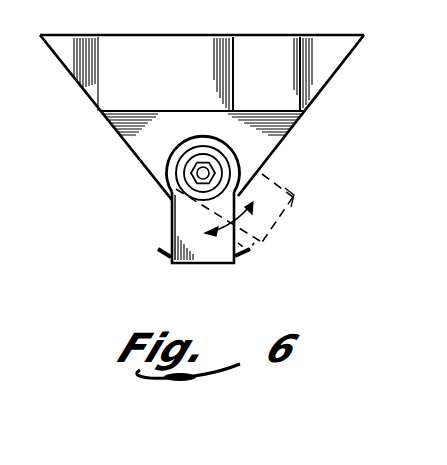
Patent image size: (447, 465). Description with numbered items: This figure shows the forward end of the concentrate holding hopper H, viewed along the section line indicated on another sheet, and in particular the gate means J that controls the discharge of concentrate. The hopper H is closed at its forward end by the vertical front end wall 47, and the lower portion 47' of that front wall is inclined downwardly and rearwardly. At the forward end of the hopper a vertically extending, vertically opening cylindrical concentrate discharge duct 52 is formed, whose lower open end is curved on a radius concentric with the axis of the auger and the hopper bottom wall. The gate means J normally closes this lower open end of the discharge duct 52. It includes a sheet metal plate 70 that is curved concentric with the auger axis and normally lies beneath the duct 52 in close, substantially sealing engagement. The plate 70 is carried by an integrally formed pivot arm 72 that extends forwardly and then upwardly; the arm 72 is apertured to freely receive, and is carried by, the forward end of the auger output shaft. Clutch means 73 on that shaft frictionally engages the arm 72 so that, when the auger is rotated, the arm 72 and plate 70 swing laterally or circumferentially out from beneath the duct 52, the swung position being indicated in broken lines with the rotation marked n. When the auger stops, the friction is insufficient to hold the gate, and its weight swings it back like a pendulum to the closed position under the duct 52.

The front end wall 47 is at (202, 102).
The lower portion of the front wall 47' is at (110, 142).
The hopper H is at (91, 98).
The gate means J is at (160, 217).
The concentrate discharge duct 52 is at (166, 234).
The plate 70 is at (157, 253).
The pivot arm 72 is at (200, 268).
The clutch means 73 is at (240, 160).
The rotated position n is at (235, 212).